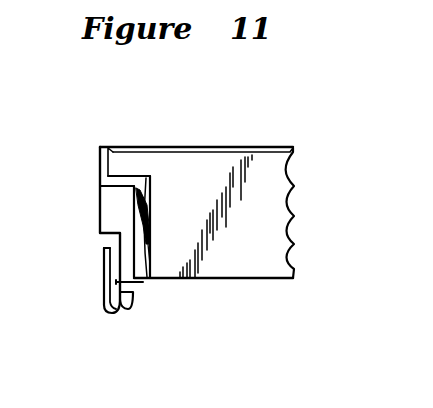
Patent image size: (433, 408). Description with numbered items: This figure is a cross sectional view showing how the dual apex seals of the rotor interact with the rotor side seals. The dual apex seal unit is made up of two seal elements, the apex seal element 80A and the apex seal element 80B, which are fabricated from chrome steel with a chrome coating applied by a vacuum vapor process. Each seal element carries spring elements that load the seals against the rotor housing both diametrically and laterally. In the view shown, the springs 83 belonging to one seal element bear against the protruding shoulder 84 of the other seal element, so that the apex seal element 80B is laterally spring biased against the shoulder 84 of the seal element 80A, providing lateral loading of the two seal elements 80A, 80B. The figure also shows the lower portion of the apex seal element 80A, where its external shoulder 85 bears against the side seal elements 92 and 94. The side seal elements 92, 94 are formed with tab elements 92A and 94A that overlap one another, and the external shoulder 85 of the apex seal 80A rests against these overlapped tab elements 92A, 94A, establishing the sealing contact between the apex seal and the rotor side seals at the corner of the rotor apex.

The apex seal element 80A is at (100, 200).
The apex seal element 80B is at (218, 147).
The spring 83 is at (147, 236).
The protruding shoulder 84 is at (145, 178).
The external shoulder 85 is at (110, 238).
The side seal element 92 is at (104, 303).
The tab element 92A is at (102, 257).
The side seal element 94 is at (134, 308).
The tab element 94A is at (140, 282).